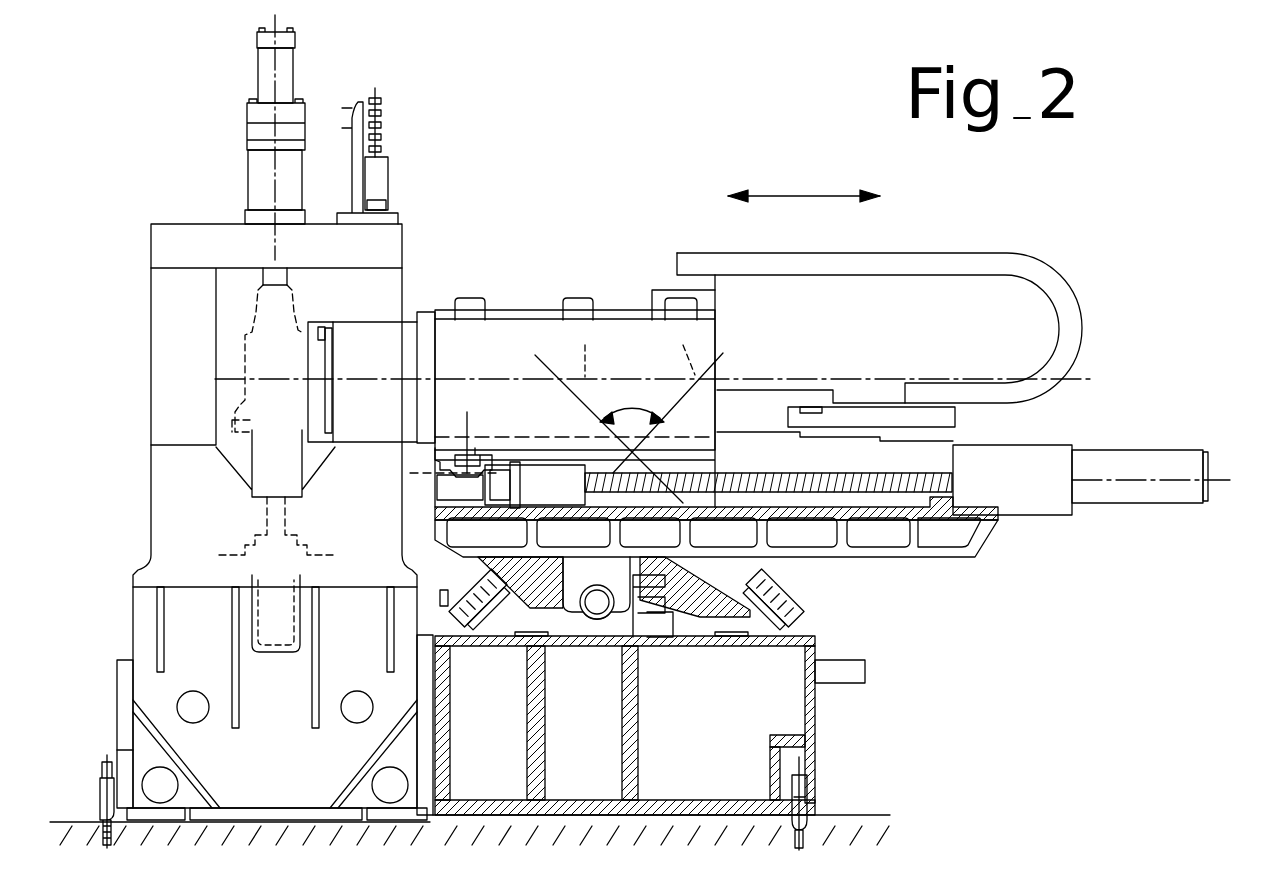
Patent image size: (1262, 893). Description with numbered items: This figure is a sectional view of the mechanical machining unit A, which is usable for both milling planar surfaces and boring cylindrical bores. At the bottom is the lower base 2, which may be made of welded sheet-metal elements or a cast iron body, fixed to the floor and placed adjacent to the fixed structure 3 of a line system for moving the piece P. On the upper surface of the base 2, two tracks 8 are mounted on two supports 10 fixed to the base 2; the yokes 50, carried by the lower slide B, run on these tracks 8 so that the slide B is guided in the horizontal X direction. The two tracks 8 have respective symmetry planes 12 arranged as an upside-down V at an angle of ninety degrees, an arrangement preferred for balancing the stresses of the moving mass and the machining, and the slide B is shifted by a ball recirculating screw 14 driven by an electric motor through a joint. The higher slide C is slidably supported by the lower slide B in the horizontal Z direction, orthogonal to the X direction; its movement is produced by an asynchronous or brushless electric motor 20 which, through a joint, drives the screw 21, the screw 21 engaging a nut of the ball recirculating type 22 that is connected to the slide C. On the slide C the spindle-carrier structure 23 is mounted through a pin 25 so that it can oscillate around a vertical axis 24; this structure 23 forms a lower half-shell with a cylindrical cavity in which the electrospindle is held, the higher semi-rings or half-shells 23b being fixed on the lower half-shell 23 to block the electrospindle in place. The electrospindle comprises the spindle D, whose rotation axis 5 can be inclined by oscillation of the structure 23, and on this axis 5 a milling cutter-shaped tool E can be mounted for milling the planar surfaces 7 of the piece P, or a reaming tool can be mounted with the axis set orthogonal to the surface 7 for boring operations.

The lower base 2 is at (815, 728).
The fixed structure 3 is at (127, 618).
The rotation axis 5 is at (483, 378).
The planar surfaces 7 is at (318, 335).
The tracks 8 is at (470, 605).
The supports 10 is at (472, 600).
The symmetry planes 12 is at (632, 346).
The ball recirculating screw 14 is at (597, 615).
The electric motor 20 is at (1095, 463).
The screw 21 is at (870, 478).
The ball recirculating nut 22 is at (545, 492).
The spindle-carrier structure 23 is at (705, 410).
The half-shells 23b is at (682, 298).
The vertical axis 24 is at (467, 423).
The pin 25 is at (440, 470).
The yokes 50 is at (503, 620).
The mechanical machining unit A is at (598, 214).
The lower slide B is at (782, 556).
The higher slide C is at (715, 337).
The spindle D is at (402, 320).
The milling cutter-shaped tool E is at (316, 425).
The piece P is at (262, 365).
The Z direction Z is at (804, 183).